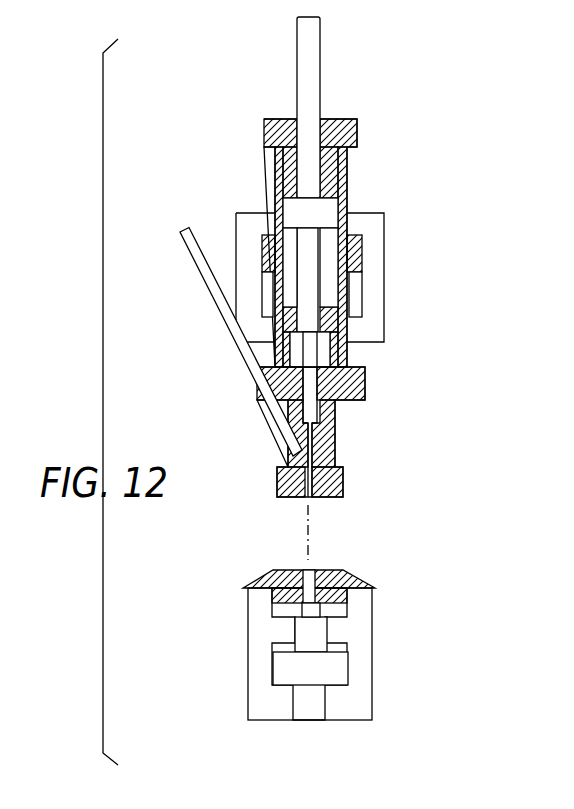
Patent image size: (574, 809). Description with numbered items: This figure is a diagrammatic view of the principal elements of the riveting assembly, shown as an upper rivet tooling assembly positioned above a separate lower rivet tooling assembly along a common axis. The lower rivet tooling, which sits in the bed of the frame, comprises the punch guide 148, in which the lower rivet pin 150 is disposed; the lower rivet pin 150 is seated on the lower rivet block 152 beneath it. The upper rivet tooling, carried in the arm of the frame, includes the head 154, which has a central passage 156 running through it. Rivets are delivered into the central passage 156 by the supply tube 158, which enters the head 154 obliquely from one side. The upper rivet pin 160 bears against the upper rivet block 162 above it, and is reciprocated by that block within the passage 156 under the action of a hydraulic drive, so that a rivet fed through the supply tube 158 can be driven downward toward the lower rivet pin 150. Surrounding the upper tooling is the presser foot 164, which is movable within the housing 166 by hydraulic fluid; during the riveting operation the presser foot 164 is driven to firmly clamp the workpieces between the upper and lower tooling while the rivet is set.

The punch guide 148 is at (340, 572).
The lower rivet pin 150 is at (312, 598).
The lower rivet block 152 is at (320, 665).
The head 154 is at (322, 425).
The central passage 156 is at (320, 455).
The supply tube 158 is at (240, 323).
The upper rivet pin 160 is at (317, 357).
The upper rivet block 162 is at (330, 204).
The presser foot 164 is at (355, 250).
The housing 166 is at (385, 303).